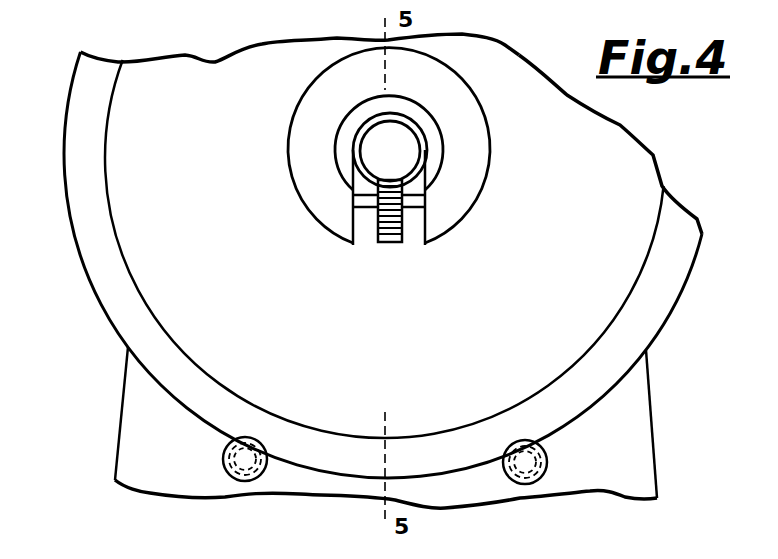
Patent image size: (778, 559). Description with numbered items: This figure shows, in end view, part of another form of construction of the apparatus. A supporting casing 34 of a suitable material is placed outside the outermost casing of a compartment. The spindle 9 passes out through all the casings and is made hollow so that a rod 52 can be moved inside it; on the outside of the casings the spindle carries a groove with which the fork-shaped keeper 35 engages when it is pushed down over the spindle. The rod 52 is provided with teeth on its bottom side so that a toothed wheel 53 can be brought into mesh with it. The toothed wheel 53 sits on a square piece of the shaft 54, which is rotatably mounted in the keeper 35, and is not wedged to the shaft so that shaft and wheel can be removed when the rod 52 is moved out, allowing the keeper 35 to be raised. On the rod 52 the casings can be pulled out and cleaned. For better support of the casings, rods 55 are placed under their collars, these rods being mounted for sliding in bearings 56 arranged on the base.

The spindle 9 is at (420, 138).
The supporting casing 34 is at (140, 248).
The keeper 35 is at (325, 97).
The rod 52 is at (375, 150).
The toothed wheel 53 is at (398, 245).
The shaft 54 is at (362, 200).
The rod 55 is at (257, 482).
The bearing 56 is at (227, 470).